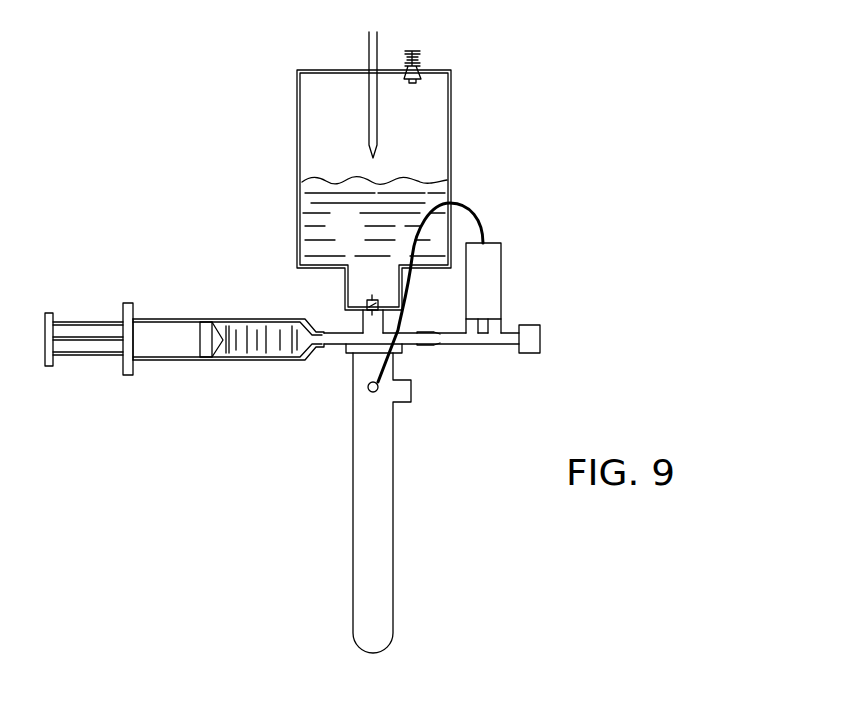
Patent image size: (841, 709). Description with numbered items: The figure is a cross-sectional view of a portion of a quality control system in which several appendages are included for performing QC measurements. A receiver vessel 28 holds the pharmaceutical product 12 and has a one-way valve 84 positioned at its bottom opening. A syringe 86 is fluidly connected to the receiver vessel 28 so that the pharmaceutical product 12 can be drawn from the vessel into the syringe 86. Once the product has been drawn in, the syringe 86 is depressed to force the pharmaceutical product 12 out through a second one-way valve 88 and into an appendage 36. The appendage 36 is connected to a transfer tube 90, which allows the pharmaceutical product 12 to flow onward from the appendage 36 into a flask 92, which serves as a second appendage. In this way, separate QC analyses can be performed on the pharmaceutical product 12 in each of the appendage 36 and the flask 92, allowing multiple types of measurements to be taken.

The receiver vessel 28 is at (451, 118).
The pharmaceutical product 12 is at (362, 237).
The one-way valve 84 is at (366, 309).
The syringe 86 is at (250, 361).
The second one-way valve 88 is at (423, 340).
The appendage 36 is at (501, 274).
The transfer tube 90 is at (477, 211).
The flask 92 is at (393, 506).